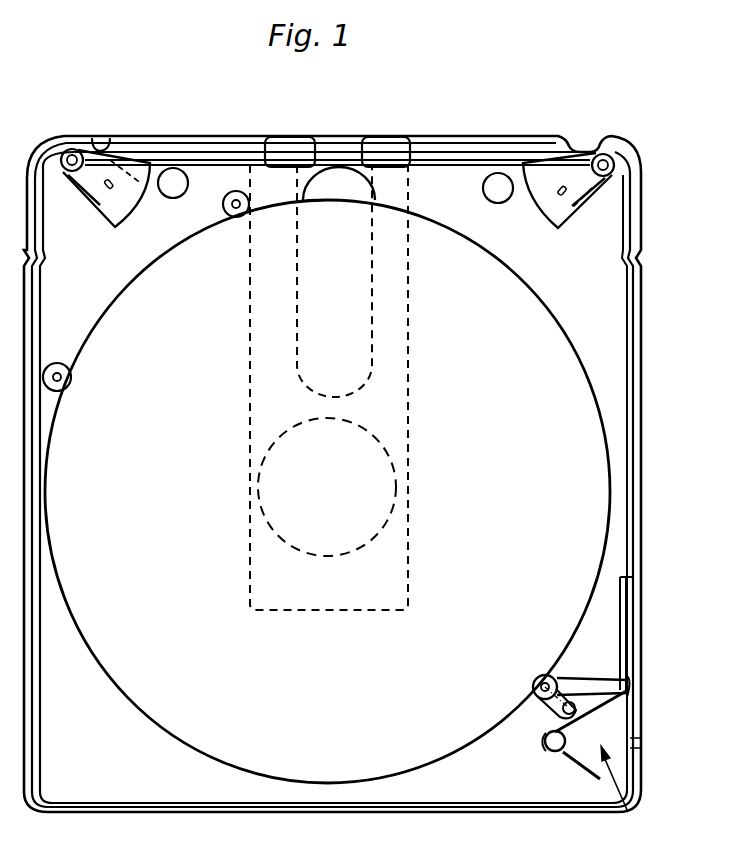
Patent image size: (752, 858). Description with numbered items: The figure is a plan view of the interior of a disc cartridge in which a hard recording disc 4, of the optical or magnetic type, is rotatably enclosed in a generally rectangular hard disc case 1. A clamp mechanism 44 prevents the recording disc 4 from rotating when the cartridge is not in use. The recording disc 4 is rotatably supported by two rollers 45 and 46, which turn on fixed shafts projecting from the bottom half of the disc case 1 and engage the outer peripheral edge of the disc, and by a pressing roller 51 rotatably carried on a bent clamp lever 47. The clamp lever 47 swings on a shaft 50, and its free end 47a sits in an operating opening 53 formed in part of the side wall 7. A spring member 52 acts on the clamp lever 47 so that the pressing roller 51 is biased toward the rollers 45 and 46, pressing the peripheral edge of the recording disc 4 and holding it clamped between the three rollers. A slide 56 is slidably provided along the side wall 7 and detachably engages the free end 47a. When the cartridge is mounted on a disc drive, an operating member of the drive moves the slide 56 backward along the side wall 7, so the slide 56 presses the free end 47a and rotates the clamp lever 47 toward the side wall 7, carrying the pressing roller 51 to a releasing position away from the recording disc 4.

The disc case 1 is at (643, 151).
The recording disc 4 is at (562, 320).
The side wall 7 is at (629, 480).
The clamp mechanism 44 is at (624, 795).
The roller 45 is at (60, 363).
The roller 46 is at (222, 207).
The clamp lever 47 is at (592, 684).
The free end 47a is at (634, 681).
The shaft 50 is at (556, 716).
The pressing roller 51 is at (538, 676).
The spring member 52 is at (553, 755).
The operating opening 53 is at (632, 742).
The slide 56 is at (634, 593).